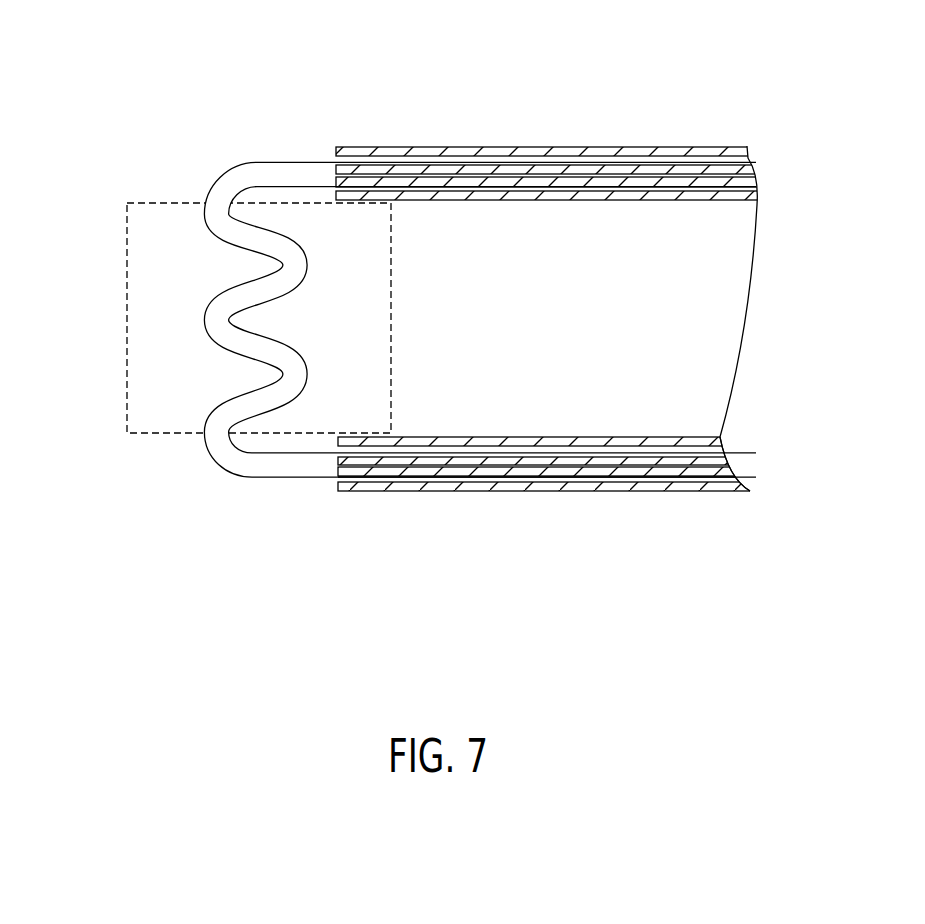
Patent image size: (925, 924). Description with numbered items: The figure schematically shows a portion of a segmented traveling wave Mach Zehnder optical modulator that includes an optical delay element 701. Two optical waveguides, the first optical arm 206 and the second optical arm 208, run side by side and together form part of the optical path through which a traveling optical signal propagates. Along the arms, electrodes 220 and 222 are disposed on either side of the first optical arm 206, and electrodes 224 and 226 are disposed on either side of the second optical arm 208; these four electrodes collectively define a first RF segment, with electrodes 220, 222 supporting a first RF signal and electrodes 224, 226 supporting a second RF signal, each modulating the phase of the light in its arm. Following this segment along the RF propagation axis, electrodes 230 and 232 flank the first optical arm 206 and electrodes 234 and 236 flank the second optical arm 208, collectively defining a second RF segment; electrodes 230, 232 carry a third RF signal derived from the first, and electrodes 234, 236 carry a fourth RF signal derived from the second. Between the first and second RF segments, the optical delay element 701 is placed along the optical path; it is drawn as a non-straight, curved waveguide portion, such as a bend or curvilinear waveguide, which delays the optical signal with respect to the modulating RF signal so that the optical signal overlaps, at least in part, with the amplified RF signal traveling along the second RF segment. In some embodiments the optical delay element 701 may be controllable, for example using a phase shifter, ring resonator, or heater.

The first optical arm 206 is at (273, 161).
The second optical arm 208 is at (233, 195).
The electrode 220 is at (708, 194).
The electrode 222 is at (635, 181).
The electrode 224 is at (752, 180).
The electrode 226 is at (650, 147).
The electrode 230 is at (645, 437).
The electrode 232 is at (722, 438).
The electrode 234 is at (717, 478).
The electrode 236 is at (580, 492).
The optical delay element 701 is at (123, 303).